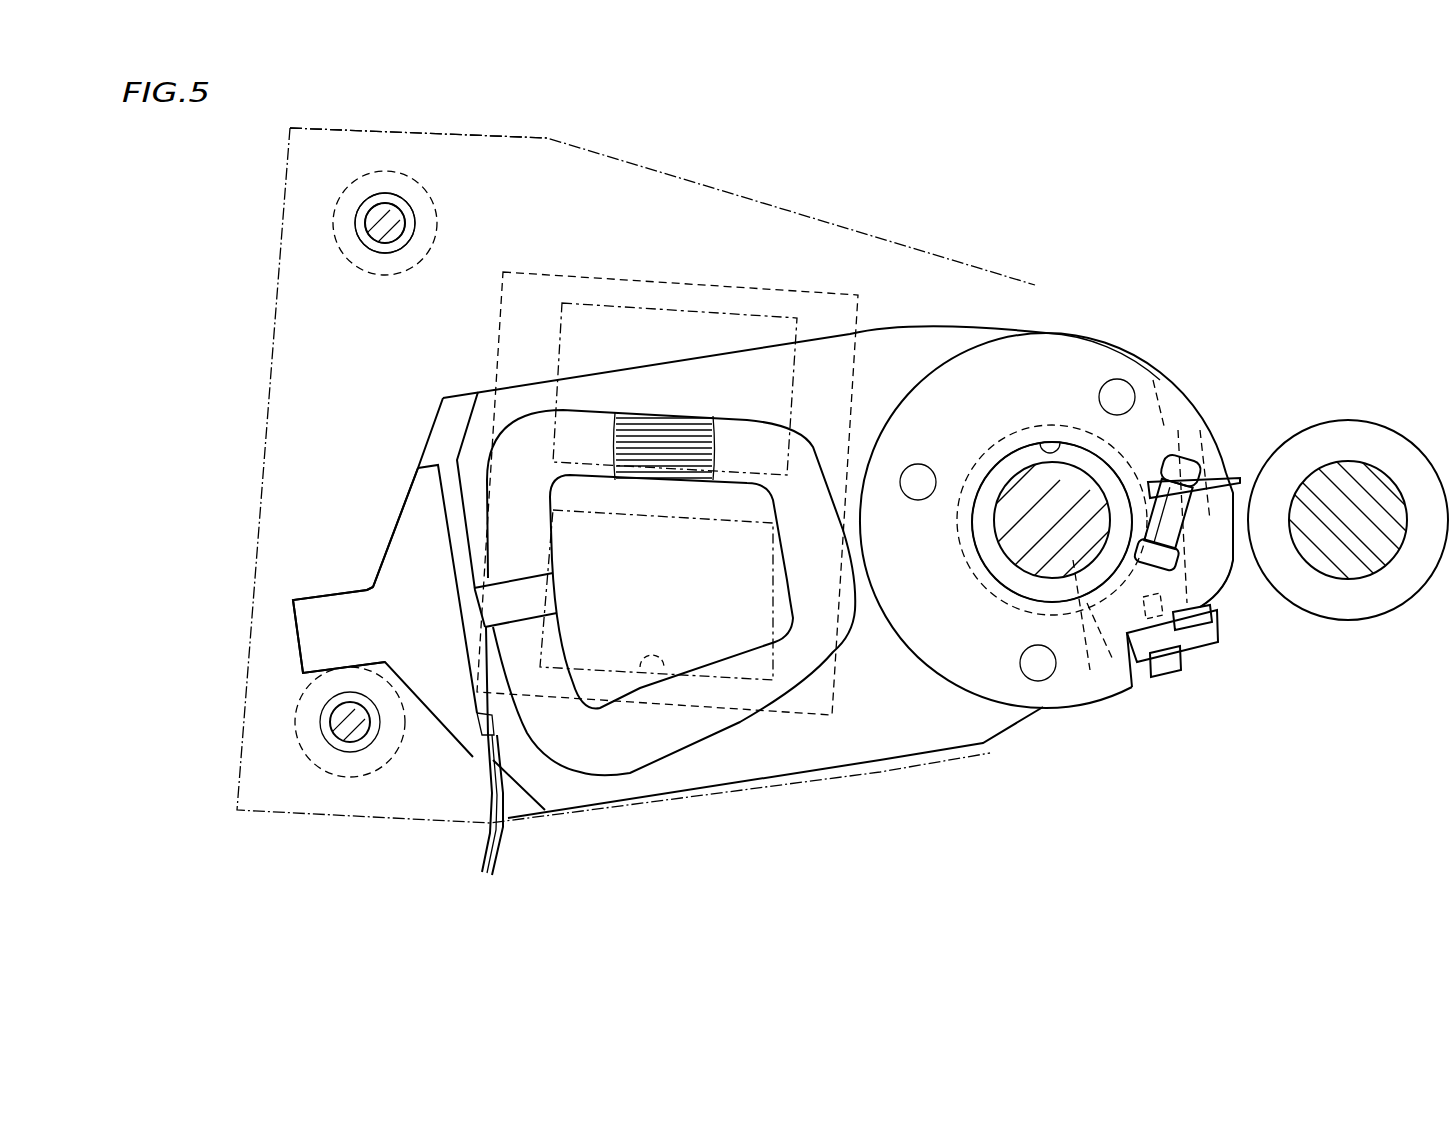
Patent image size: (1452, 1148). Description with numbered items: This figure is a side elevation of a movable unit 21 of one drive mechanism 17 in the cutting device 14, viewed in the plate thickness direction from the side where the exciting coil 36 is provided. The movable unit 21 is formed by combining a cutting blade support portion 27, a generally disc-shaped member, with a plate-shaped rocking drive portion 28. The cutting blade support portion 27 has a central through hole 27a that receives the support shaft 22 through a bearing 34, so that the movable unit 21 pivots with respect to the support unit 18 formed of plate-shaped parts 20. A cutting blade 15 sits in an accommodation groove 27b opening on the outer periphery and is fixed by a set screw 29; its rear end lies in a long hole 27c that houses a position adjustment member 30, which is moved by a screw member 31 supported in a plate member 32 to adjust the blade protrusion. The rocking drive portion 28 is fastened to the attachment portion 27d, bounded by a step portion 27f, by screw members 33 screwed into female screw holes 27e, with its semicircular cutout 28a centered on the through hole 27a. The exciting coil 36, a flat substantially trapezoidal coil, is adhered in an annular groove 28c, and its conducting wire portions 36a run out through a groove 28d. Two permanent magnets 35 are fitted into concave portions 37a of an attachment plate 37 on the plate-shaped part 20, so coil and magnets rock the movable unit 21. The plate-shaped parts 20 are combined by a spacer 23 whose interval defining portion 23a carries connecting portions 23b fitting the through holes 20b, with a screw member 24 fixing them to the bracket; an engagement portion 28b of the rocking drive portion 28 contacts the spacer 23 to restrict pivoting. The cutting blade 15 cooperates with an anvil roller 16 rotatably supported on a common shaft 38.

The cutting device 14 is at (1242, 245).
The cutting blade 15 is at (1238, 478).
The anvil roller 16 is at (1378, 437).
The drive mechanism 17 is at (1098, 818).
The support unit 18 is at (870, 218).
The plate-shaped part 20 is at (800, 238).
The through hole 20b is at (410, 217).
The movable unit 21 is at (400, 480).
The support shaft 22 is at (1077, 596).
The spacer 23 is at (340, 253).
The interval defining portion 23a is at (367, 172).
The connecting portion 23b is at (372, 205).
The screw member 24 is at (363, 221).
The cutting blade support portion 27 is at (1087, 712).
The through hole 27a is at (1036, 430).
The accommodation groove 27b is at (1200, 490).
The long hole 27c is at (1158, 540).
The attachment portion 27d is at (1060, 353).
The female screw hole 27e is at (1117, 379).
The step portion 27f is at (1170, 380).
The rocking drive portion 28 is at (947, 322).
The cutout 28a is at (1015, 427).
The engagement portion 28b is at (327, 603).
The annular groove 28c is at (565, 760).
The groove 28d is at (473, 710).
The set screw 29 is at (1225, 598).
The position adjustment member 30 is at (1155, 533).
The screw member 31 is at (1213, 612).
The plate member 32 is at (1182, 672).
The screw member 33 is at (1107, 377).
The bearing 34 is at (1005, 566).
The permanent magnet 35 is at (740, 300).
The exciting coil 36 is at (666, 405).
The conducting wire portion 36a is at (504, 862).
The attachment plate 37 is at (548, 270).
The concave portion 37a is at (560, 353).
The shaft 38 is at (1383, 487).